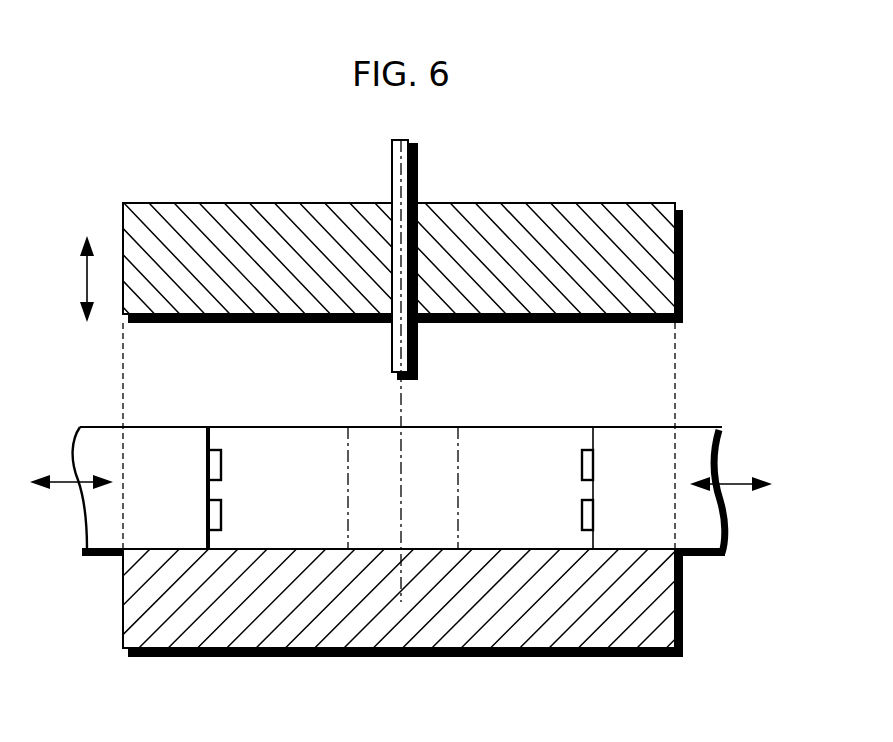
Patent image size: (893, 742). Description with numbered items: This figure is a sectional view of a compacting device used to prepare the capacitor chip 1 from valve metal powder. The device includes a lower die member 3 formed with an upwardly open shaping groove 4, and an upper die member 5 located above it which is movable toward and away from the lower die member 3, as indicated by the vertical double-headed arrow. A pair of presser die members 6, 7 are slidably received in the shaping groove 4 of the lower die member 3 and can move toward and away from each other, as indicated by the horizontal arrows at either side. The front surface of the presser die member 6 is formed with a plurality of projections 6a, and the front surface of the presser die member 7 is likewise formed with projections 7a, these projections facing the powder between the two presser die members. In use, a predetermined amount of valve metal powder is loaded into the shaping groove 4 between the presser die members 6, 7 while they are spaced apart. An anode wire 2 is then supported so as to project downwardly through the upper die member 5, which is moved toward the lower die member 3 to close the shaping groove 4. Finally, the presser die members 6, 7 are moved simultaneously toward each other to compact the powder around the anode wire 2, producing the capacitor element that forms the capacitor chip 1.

The capacitor chip 1 is at (441, 457).
The anode wire 2 is at (415, 172).
The lower die member 3 is at (170, 661).
The shaping groove 4 is at (277, 457).
The upper die member 5 is at (228, 227).
The presser die member 6 is at (97, 524).
The projections 6a is at (215, 518).
The presser die member 7 is at (678, 456).
The projections 7a is at (582, 518).